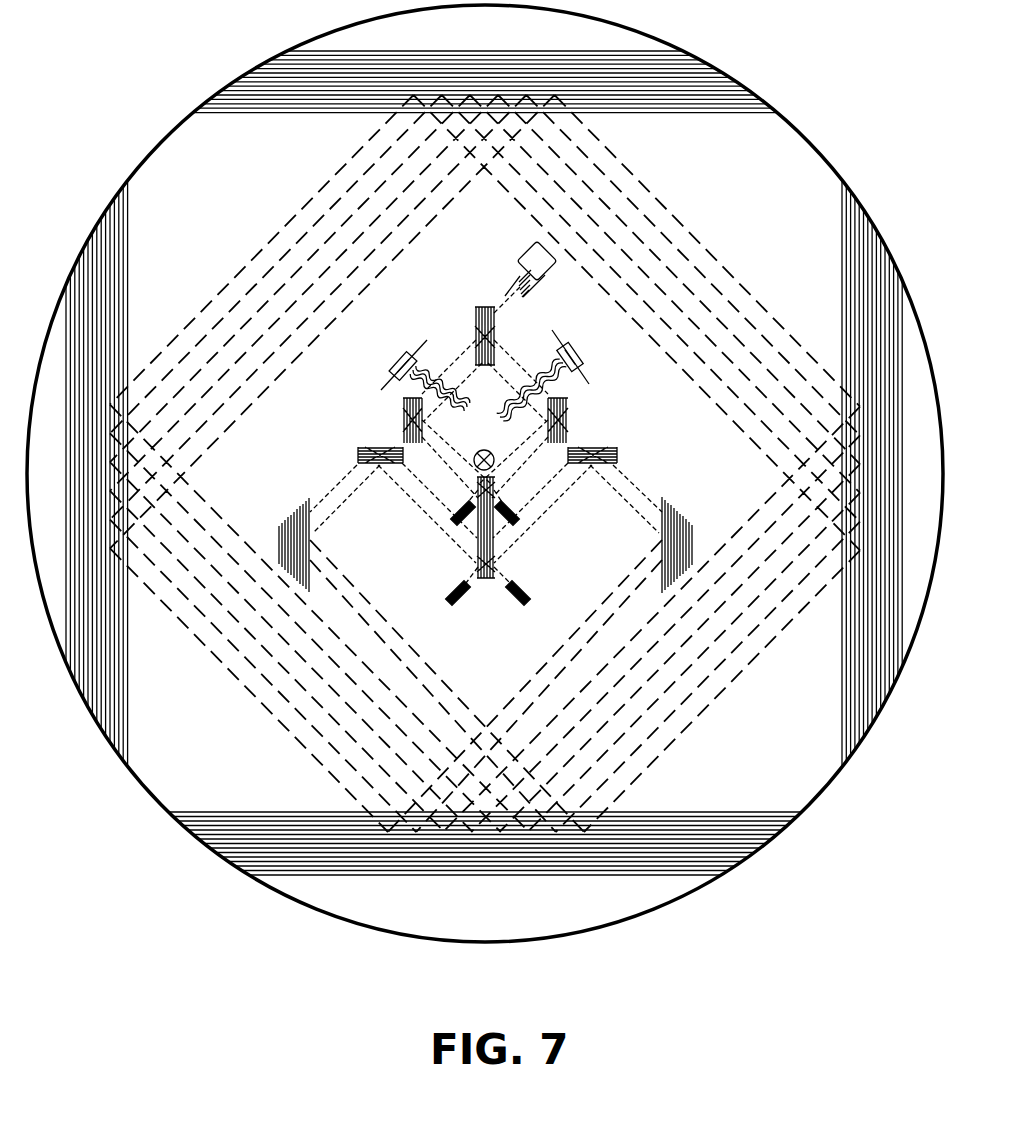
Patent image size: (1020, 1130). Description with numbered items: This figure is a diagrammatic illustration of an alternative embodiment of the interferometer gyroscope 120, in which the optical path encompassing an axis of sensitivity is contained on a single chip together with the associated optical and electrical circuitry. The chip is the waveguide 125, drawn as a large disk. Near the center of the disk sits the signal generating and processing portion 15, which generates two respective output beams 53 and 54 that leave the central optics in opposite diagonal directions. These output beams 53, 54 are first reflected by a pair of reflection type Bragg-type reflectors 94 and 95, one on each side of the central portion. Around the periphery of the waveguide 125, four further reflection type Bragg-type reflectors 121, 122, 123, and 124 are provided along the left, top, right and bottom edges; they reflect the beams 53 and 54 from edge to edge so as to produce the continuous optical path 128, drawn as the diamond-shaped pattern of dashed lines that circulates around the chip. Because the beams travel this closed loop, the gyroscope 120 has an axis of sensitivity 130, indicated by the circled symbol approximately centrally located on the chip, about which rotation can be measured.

The interferometer gyroscope 120 is at (510, 565).
The Bragg-type reflector 121 is at (108, 733).
The Bragg-type reflector 122 is at (661, 62).
The Bragg-type reflector 123 is at (868, 235).
The Bragg-type reflector 124 is at (762, 835).
The waveguide 125 is at (147, 163).
The continuous optical path 128 is at (210, 236).
The signal generating and processing portion 15 is at (441, 322).
The axis of sensitivity 130 is at (480, 451).
The output beam 53 is at (643, 490).
The output beam 54 is at (327, 490).
The Bragg-type reflector 94 is at (684, 520).
The Bragg-type reflector 95 is at (290, 520).